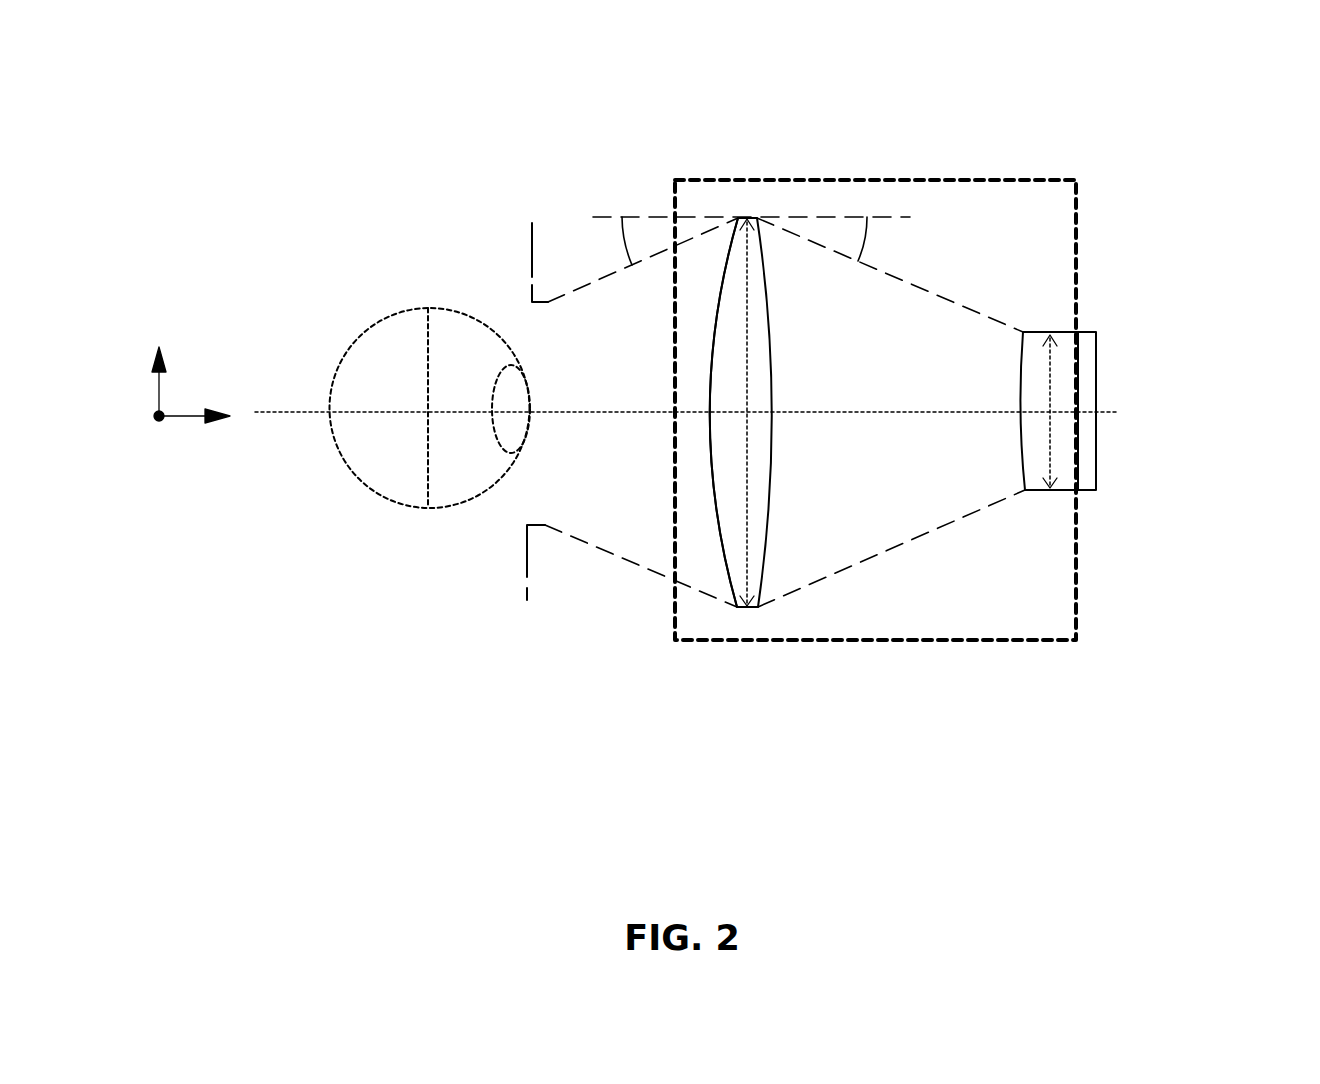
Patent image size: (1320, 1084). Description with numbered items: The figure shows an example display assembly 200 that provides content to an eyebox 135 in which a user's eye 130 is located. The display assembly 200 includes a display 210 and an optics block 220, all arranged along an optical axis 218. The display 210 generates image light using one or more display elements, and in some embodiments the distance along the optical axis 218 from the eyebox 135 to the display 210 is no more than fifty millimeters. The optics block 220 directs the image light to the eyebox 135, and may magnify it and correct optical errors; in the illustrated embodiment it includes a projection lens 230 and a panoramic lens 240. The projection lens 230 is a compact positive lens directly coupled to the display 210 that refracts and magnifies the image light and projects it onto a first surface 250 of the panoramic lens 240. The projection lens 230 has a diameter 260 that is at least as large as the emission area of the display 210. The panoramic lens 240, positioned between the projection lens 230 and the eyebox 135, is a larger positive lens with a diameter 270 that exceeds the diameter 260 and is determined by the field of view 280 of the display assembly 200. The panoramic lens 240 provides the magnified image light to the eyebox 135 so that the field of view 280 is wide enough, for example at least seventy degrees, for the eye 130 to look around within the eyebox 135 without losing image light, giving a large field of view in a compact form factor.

The display assembly 200 is at (141, 69).
The eye 130 is at (387, 317).
The eyebox 135 is at (523, 553).
The display 210 is at (1097, 475).
The optical axis 218 is at (1116, 412).
The optics block 220 is at (1050, 180).
The projection lens 230 is at (1034, 492).
The panoramic lens 240 is at (728, 582).
The first surface 250 is at (765, 244).
The diameter of projection lens 260 is at (1058, 373).
The diameter of panoramic lens 270 is at (737, 265).
The field of view 280 is at (553, 297).